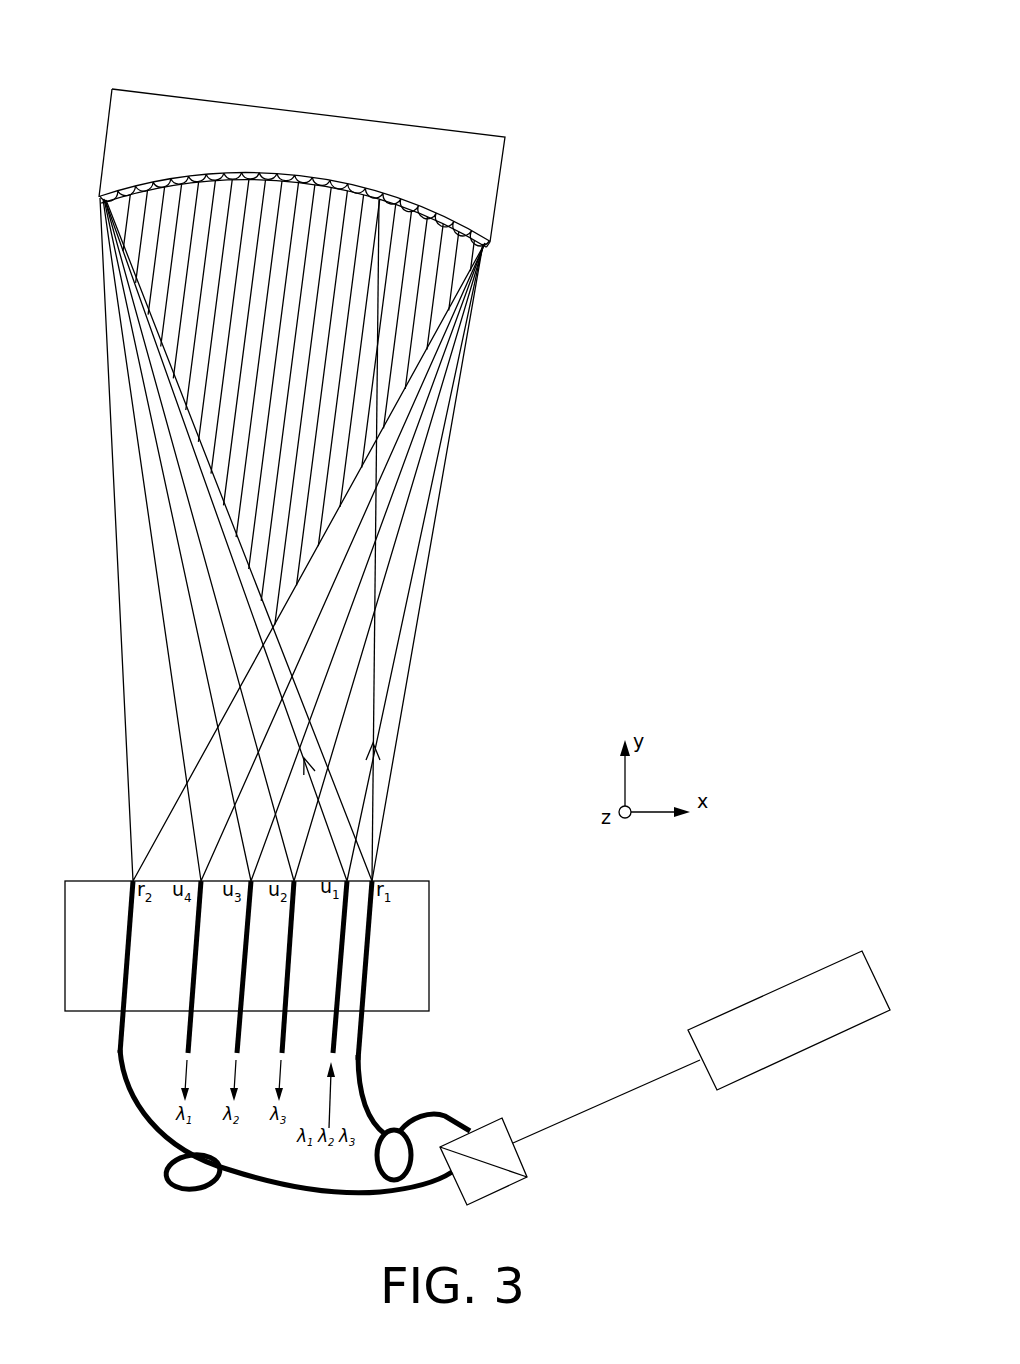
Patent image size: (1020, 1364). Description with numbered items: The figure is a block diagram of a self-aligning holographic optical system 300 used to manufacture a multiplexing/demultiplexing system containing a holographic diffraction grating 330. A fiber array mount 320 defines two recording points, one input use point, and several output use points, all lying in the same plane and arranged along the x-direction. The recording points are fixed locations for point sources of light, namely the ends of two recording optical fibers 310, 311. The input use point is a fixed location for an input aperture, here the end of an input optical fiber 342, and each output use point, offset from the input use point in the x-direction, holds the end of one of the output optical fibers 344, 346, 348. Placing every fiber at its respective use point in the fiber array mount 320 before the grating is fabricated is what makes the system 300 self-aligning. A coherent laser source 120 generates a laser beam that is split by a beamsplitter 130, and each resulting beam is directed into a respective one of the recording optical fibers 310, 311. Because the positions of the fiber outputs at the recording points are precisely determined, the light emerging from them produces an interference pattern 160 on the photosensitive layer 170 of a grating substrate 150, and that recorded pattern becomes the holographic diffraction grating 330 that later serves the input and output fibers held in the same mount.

The self-aligning holographic optical system 300 is at (128, 26).
The grating substrate 150 is at (322, 128).
The holographic diffraction grating 330 is at (76, 166).
The photosensitive layer 170 is at (481, 249).
The interference pattern 160 is at (426, 366).
The fiber array mount 320 is at (430, 934).
The input optical fiber 342 is at (338, 908).
The output optical fiber 344 is at (290, 910).
The output optical fiber 346 is at (243, 945).
The output optical fiber 348 is at (196, 920).
The recording optical fiber 310 is at (364, 1060).
The recording optical fiber 311 is at (262, 1183).
The beamsplitter 130 is at (498, 1113).
The coherent laser source 120 is at (773, 989).